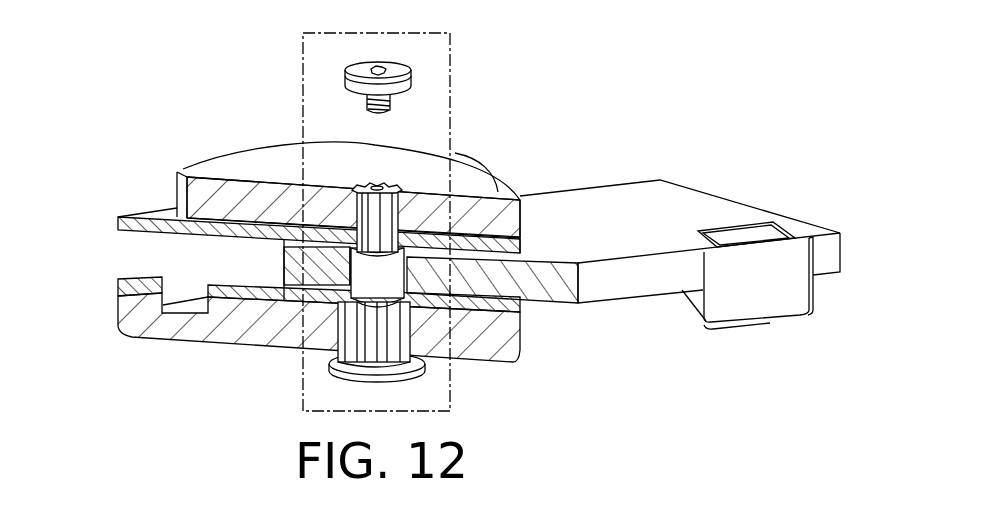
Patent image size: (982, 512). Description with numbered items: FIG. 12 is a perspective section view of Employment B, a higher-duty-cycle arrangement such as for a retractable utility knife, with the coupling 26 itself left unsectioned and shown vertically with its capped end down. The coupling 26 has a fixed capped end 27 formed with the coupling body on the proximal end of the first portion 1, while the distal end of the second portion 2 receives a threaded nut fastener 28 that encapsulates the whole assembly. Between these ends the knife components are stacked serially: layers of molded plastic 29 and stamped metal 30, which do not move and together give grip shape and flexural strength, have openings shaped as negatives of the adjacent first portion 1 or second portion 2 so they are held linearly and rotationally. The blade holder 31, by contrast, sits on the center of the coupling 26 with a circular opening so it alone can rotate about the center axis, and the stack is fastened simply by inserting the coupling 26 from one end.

The first portion 1 is at (393, 332).
The second portion 2 is at (387, 223).
The coupling 26 is at (358, 276).
The fixed capped end 27 is at (410, 370).
The threaded nut fastener 28 is at (352, 68).
The molded plastic layer 29 is at (282, 172).
The stamped metal layer 30 is at (170, 213).
The blade holder 31 is at (617, 222).